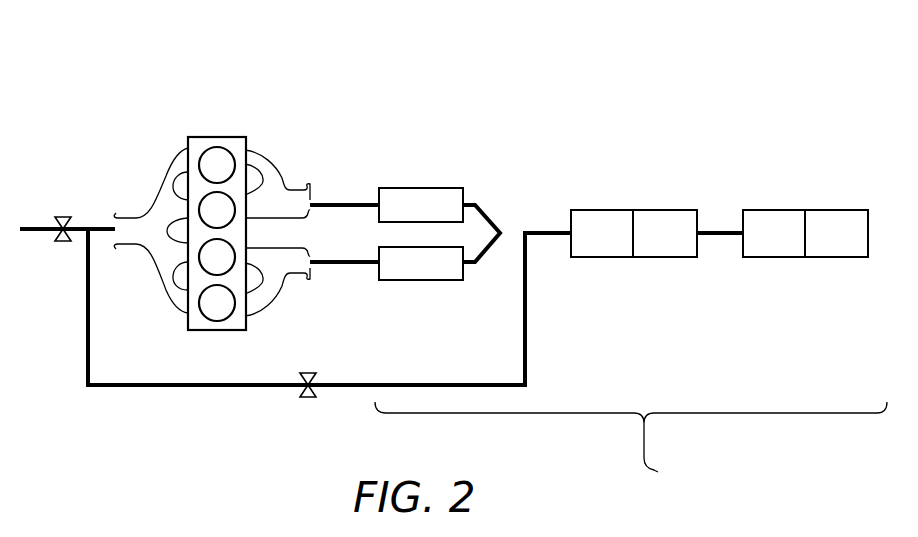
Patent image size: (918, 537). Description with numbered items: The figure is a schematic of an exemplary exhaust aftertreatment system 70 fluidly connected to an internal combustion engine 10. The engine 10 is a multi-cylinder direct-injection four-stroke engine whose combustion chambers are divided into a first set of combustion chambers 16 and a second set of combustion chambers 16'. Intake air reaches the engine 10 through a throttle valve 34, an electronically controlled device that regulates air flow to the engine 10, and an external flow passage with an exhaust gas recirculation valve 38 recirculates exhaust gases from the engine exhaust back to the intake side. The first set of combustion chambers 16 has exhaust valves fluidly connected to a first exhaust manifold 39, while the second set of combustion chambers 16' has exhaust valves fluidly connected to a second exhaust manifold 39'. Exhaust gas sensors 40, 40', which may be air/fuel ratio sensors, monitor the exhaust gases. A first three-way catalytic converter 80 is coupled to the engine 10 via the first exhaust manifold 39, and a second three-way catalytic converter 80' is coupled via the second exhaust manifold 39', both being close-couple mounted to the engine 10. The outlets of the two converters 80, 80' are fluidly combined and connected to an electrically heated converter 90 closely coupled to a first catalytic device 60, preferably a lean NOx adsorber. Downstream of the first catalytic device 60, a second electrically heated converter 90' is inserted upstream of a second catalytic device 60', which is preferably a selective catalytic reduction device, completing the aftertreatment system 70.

The internal combustion engine 10 is at (197, 116).
The first set of combustion chambers 16 is at (255, 179).
The second set of combustion chambers 16' is at (176, 287).
The throttle valve 34 is at (63, 216).
The exhaust gas recirculation valve 38 is at (308, 372).
The first exhaust manifold 39 is at (301, 169).
The second exhaust manifold 39' is at (277, 295).
The exhaust gas sensor 40 is at (351, 168).
The exhaust gas sensor 40' is at (352, 306).
The first three-way catalytic converter 80 is at (421, 161).
The second three-way catalytic converter 80' is at (421, 308).
The electrically heated converter 90 is at (596, 190).
The first catalytic device 60 is at (663, 188).
The second electrically heated converter 90' is at (770, 190).
The second catalytic device 60' is at (844, 188).
The exhaust aftertreatment system 70 is at (631, 445).